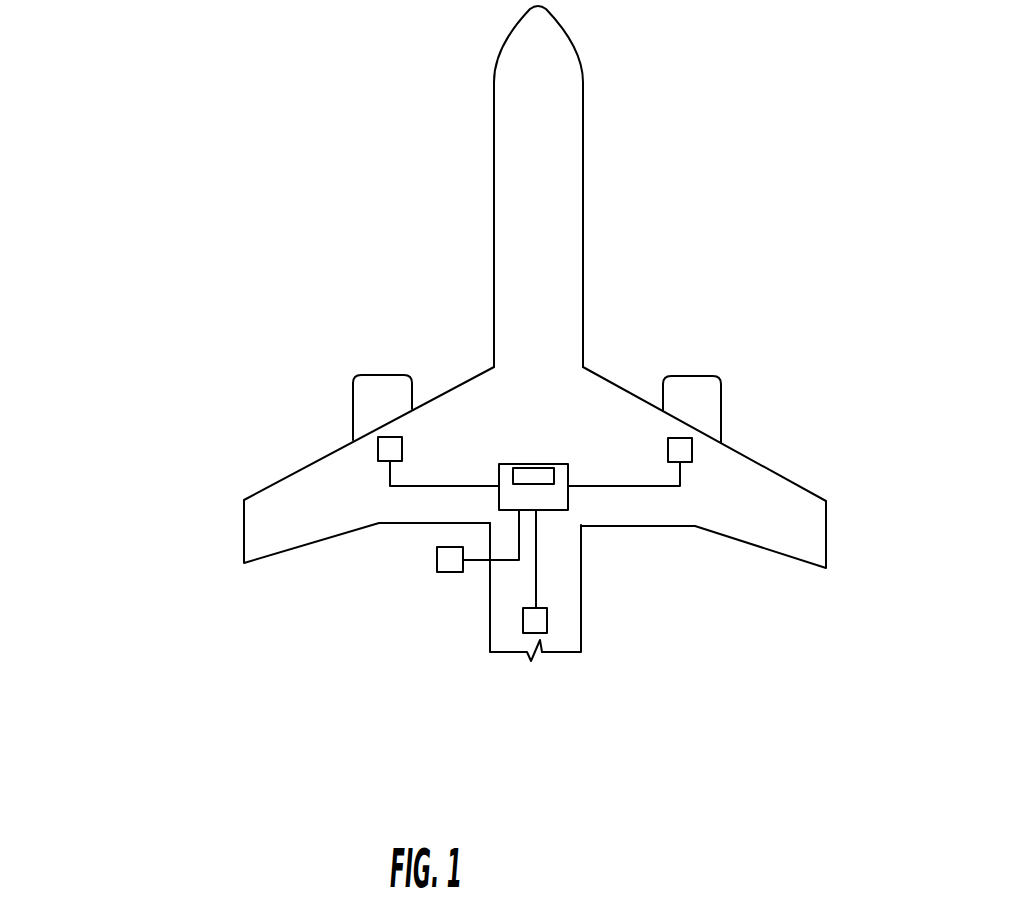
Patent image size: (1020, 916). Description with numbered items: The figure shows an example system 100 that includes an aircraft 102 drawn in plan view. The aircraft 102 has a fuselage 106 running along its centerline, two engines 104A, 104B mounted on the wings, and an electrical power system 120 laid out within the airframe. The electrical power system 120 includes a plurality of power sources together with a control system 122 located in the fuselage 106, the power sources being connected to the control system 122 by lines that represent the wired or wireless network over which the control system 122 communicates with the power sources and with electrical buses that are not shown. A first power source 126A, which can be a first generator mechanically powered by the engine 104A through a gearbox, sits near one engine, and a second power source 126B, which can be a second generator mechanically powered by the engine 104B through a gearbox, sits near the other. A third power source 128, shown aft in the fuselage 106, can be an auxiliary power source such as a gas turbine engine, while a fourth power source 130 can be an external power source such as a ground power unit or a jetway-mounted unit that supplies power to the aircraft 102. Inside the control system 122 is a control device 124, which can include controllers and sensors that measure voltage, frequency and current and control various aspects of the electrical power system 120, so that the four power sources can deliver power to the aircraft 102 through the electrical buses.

The system 100 is at (148, 164).
The aircraft 102 is at (583, 82).
The fuselage 106 is at (566, 281).
The engine 104A is at (375, 375).
The engine 104B is at (690, 376).
The first power source 126A is at (388, 449).
The second power source 126B is at (683, 450).
The electrical power system 120 is at (527, 444).
The control system 122 is at (499, 470).
The control device 124 is at (554, 476).
The third power source 128 is at (535, 633).
The fourth power source 130 is at (451, 559).